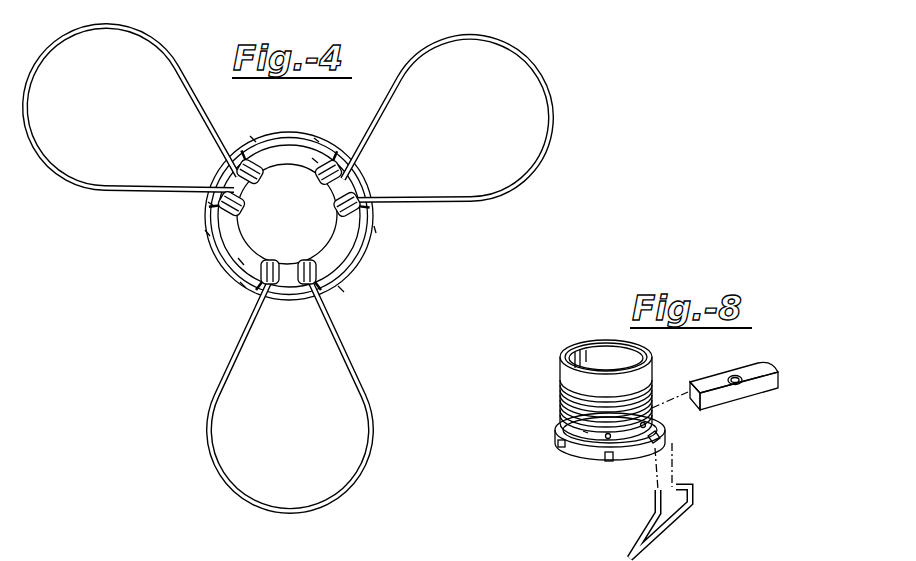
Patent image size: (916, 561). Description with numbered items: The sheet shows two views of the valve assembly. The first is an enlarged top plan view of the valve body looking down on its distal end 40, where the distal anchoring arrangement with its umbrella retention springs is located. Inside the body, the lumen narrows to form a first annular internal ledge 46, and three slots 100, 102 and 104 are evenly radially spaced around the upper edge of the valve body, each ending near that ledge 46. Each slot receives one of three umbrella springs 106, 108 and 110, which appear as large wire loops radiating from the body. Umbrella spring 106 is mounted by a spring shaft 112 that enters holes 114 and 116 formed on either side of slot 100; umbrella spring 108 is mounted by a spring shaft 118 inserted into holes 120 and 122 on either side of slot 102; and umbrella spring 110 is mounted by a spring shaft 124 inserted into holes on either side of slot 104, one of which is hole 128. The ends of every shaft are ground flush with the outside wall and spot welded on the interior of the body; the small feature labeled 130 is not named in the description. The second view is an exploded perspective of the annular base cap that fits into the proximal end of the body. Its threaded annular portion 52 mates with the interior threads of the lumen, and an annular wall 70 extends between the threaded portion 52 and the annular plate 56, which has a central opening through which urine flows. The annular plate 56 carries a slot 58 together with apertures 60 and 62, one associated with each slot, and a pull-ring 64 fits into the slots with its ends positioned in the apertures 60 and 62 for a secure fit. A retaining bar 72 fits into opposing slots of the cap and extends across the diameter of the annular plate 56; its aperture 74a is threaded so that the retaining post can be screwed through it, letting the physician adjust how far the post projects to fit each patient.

In FIG. 4, the distal end 40 is at (359, 270).
In FIG. 4, the first annular internal ledge 46 is at (348, 255).
In FIG. 4, the slot 100 is at (200, 161).
In FIG. 4, the slot 102 is at (372, 161).
In FIG. 4, the slot 104 is at (287, 314).
In FIG. 4, the umbrella spring 106 is at (90, 24).
In FIG. 4, the umbrella spring 108 is at (488, 36).
In FIG. 4, the umbrella spring 110 is at (223, 480).
In FIG. 4, the spring shaft 112 is at (210, 203).
In FIG. 4, the hole 114 is at (252, 135).
In FIG. 4, the hole 116 is at (206, 232).
In FIG. 4, the spring shaft 118 is at (315, 160).
In FIG. 4, the hole 120 is at (317, 136).
In FIG. 4, the hole 122 is at (376, 230).
In FIG. 4, the spring shaft 124 is at (240, 262).
In FIG. 4, the hole 128 is at (341, 290).
In FIG. 4, the clamp 130 is at (240, 286).
In FIG. 8, the threaded annular portion 52 is at (558, 380).
In FIG. 8, the pull-ring 64 is at (562, 426).
In FIG. 8, the annular wall 70 is at (583, 431).
In FIG. 8, the annular plate 56 is at (560, 445).
In FIG. 8, the aperture 60 is at (606, 440).
In FIG. 8, the aperture 62 is at (648, 415).
In FIG. 8, the slot 58 is at (659, 433).
In FIG. 8, the retaining bar 72 is at (777, 367).
In FIG. 8, the aperture 74a is at (733, 377).